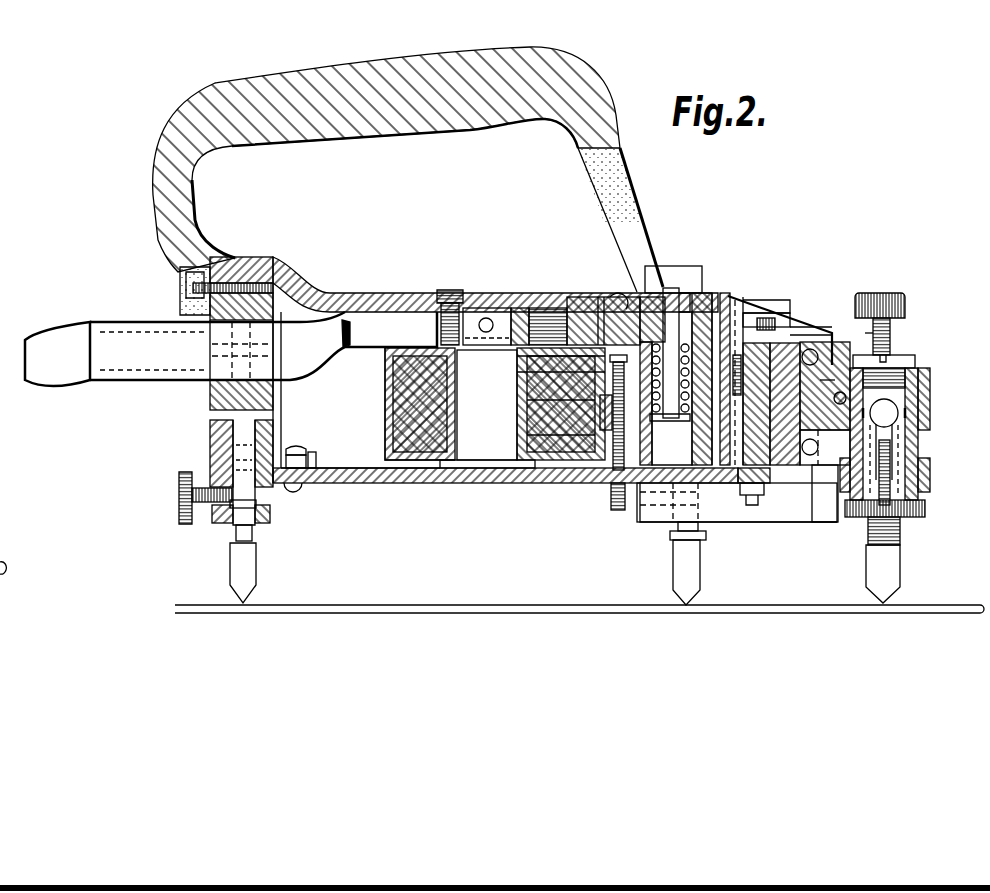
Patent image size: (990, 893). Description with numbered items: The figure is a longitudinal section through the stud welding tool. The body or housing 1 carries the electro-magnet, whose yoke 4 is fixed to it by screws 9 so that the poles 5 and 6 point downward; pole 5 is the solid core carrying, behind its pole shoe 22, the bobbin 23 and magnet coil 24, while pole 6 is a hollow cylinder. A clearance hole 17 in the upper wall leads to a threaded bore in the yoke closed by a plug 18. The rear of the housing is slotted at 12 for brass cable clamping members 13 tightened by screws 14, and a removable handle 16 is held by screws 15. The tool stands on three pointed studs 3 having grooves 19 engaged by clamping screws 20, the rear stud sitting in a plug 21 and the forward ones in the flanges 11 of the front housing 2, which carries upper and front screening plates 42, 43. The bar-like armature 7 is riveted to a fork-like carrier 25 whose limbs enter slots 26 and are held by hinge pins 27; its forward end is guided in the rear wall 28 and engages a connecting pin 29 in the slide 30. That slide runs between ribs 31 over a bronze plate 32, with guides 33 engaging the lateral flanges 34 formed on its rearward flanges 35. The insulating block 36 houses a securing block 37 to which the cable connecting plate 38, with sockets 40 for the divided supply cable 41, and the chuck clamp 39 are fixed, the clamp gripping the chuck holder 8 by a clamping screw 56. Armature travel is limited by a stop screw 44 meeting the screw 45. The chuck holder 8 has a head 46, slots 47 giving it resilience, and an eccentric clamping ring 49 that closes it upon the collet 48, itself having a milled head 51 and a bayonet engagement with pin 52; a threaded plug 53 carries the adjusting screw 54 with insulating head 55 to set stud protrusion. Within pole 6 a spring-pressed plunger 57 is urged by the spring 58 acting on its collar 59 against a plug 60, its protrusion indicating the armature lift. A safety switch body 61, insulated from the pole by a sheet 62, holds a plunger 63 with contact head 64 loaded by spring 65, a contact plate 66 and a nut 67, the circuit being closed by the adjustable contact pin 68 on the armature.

The body or housing 1 is at (398, 300).
The front housing 2 is at (736, 322).
The adjustable pointed studs or pins 3 is at (250, 572).
The magnet yoke 4 is at (588, 304).
The pole 5 is at (474, 452).
The pole 6 is at (632, 302).
The armature 7 is at (380, 482).
The chuck or stud holder 8 is at (918, 443).
The screws 9 is at (455, 297).
The parallel flanges 11 is at (660, 518).
The slot 12 is at (210, 318).
The cable clamping members 13 is at (210, 403).
The screws 14 is at (250, 270).
The screws 15 is at (181, 283).
The removable handle 16 is at (152, 191).
The clearance hole 17 is at (497, 304).
The plug 18 is at (540, 306).
The peripheral grooves 19 is at (254, 506).
The clamping screw 20 is at (203, 503).
The plug 21 is at (283, 486).
The pole shoe 22 is at (440, 470).
The bobbin 23 is at (390, 455).
The magnet coil 24 is at (390, 412).
The fork-like carrier 25 is at (288, 452).
The slots 26 is at (210, 448).
The screwed hinge pins 27 is at (311, 450).
The rear wall 28 is at (724, 484).
The connecting pin 29 is at (752, 506).
The slide 30 is at (770, 480).
The parallel ribs 31 is at (715, 320).
The plate 32 is at (688, 320).
The guides 33 is at (730, 300).
The lateral flanges 34 is at (762, 330).
The parallel flanges 35 is at (776, 330).
The rectangular block 36 is at (800, 345).
The metal securing block 37 is at (795, 340).
The welding supply cable connecting plate 38 is at (865, 333).
The chuck clamp 39 is at (930, 384).
The sockets 40 is at (812, 458).
The supply cable 41 is at (350, 330).
The upper screening plate 42 is at (772, 330).
The front screening plate 43 is at (838, 510).
The stop screw 44 is at (820, 345).
The screw 45 is at (746, 312).
The head 46 is at (918, 494).
The slots 47 is at (910, 500).
The collet 48 is at (905, 453).
The eccentric clamping ring 49 is at (930, 470).
The head 51 is at (910, 517).
The radial pin or screw 52 is at (918, 413).
The screw-threaded plug 53 is at (905, 362).
The adjusting screw 54 is at (890, 332).
The insulating head 55 is at (890, 296).
The clamping screw 56 is at (930, 374).
The spring-pressed plunger 57 is at (663, 290).
The spring 58 is at (648, 292).
The collar 59 is at (615, 505).
The screw-threaded plug 60 is at (676, 292).
The switch body 61 is at (527, 392).
The sheet 62 is at (527, 410).
The metal plunger 63 is at (527, 436).
The contact head 64 is at (614, 470).
The spring 65 is at (600, 480).
The metal contact plate 66 is at (520, 365).
The nut 67 is at (510, 377).
The contact pin 68 is at (620, 445).